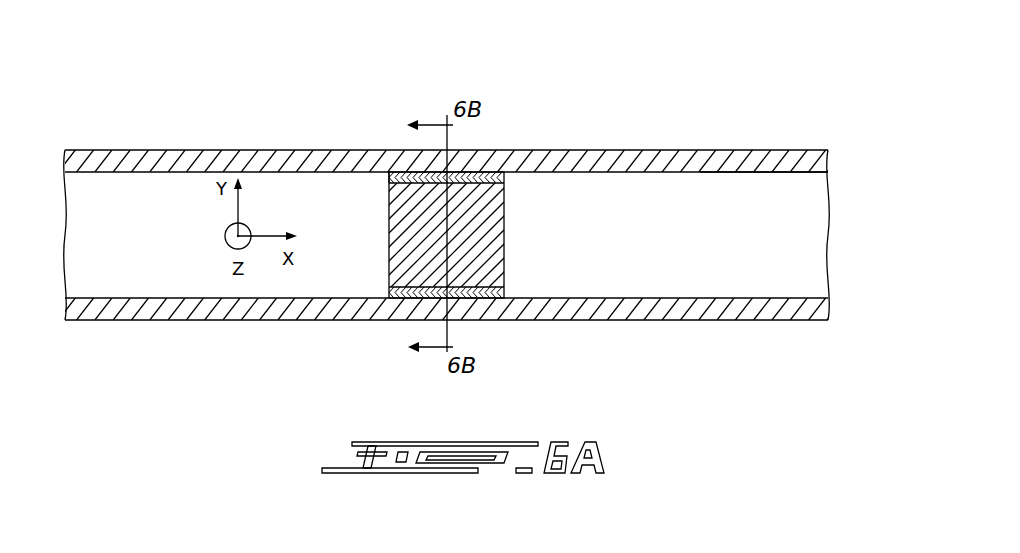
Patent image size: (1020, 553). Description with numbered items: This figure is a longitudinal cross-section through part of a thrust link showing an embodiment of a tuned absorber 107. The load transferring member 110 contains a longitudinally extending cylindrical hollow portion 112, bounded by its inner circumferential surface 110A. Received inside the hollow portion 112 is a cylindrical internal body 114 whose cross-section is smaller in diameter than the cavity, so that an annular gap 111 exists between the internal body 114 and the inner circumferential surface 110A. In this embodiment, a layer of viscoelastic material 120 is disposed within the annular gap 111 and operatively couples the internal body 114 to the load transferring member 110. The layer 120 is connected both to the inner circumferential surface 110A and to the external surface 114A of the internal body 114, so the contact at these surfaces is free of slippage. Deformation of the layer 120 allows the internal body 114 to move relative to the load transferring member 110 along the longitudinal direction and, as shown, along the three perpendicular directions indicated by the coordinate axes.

The tuned absorber 107 is at (350, 110).
The load transferring member 110 is at (670, 144).
The inner circumferential surface 110A is at (778, 173).
The hollow portion 112 is at (734, 284).
The internal body 114 is at (488, 238).
The external surface 114A is at (484, 180).
The annular gap 111 is at (524, 292).
The layer of viscoelastic material 120 is at (388, 173).